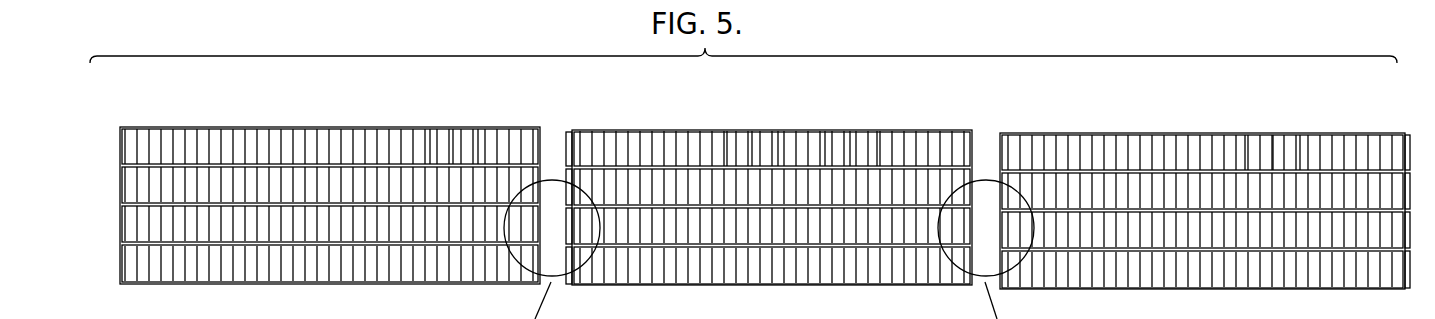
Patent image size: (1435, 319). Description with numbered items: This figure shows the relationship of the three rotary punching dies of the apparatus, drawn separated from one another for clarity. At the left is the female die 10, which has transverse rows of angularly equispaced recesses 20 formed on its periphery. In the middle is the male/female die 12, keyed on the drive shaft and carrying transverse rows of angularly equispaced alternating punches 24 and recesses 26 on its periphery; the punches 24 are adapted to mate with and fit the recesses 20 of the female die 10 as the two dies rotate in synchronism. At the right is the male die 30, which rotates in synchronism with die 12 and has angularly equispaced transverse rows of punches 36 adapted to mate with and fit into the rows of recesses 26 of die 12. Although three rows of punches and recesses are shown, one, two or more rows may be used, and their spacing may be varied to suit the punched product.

The female die 10 is at (376, 124).
The recesses 20 is at (478, 140).
The male/female die 12 is at (677, 104).
The punches 24 is at (778, 140).
The recesses 26 is at (877, 140).
The male die 30 is at (1172, 126).
The punches 36 is at (1300, 150).